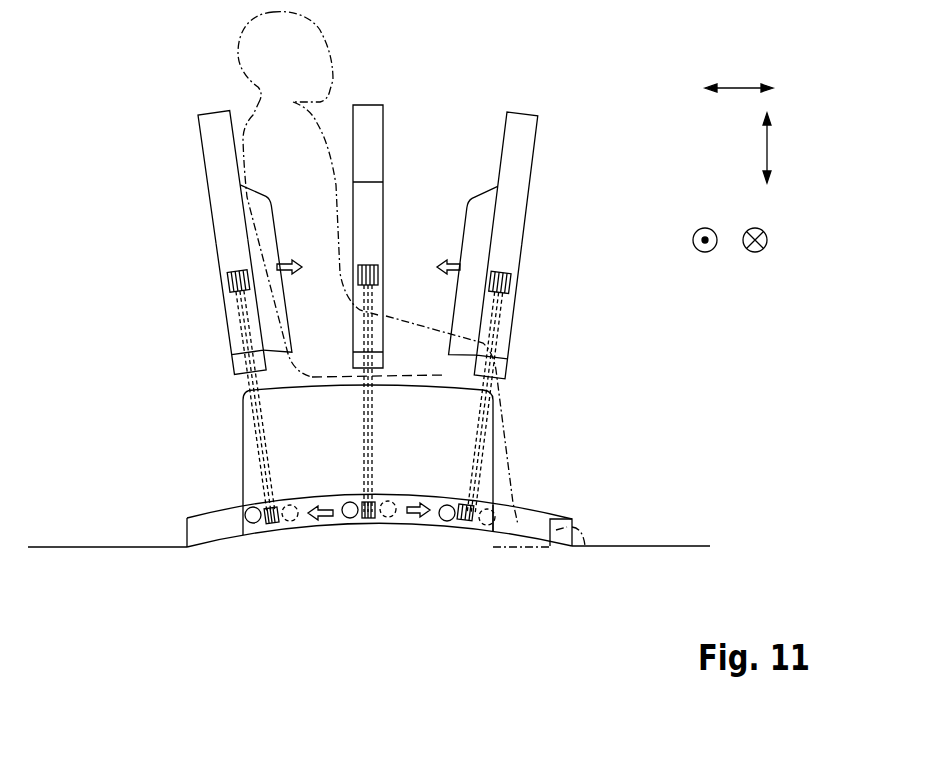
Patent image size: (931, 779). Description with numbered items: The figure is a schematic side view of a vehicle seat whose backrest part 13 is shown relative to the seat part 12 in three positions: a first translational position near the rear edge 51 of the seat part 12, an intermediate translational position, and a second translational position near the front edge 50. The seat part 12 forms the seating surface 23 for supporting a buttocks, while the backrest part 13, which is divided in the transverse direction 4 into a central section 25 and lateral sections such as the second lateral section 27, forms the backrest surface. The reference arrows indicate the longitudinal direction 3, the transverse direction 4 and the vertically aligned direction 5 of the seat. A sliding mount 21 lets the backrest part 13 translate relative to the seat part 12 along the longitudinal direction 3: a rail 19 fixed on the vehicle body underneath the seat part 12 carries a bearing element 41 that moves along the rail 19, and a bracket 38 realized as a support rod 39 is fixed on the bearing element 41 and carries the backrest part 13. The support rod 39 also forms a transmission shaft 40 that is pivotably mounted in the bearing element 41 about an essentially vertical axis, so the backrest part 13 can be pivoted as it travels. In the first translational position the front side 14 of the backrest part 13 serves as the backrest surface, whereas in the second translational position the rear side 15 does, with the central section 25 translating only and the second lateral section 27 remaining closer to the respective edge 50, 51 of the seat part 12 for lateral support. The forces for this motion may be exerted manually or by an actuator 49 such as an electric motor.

The longitudinal direction 3 is at (739, 86).
The transverse direction 4 is at (705, 254).
The vertically aligned direction 5 is at (767, 148).
The seat part 12 is at (447, 437).
The backrest part 13 is at (369, 374).
The front side 14 is at (369, 242).
The rear side 15 is at (240, 160).
The rail 19 is at (490, 528).
The sliding mount 21 is at (379, 568).
The seating surface 23 is at (417, 381).
The central section 25 is at (214, 132).
The second lateral section 27 is at (258, 235).
The bracket 38 is at (367, 453).
The support rod 39 is at (367, 453).
The transmission shaft 40 is at (243, 393).
The bearing element 41 is at (268, 527).
The actuator 49 is at (557, 533).
The front edge 50 is at (243, 473).
The rear edge 51 is at (495, 474).